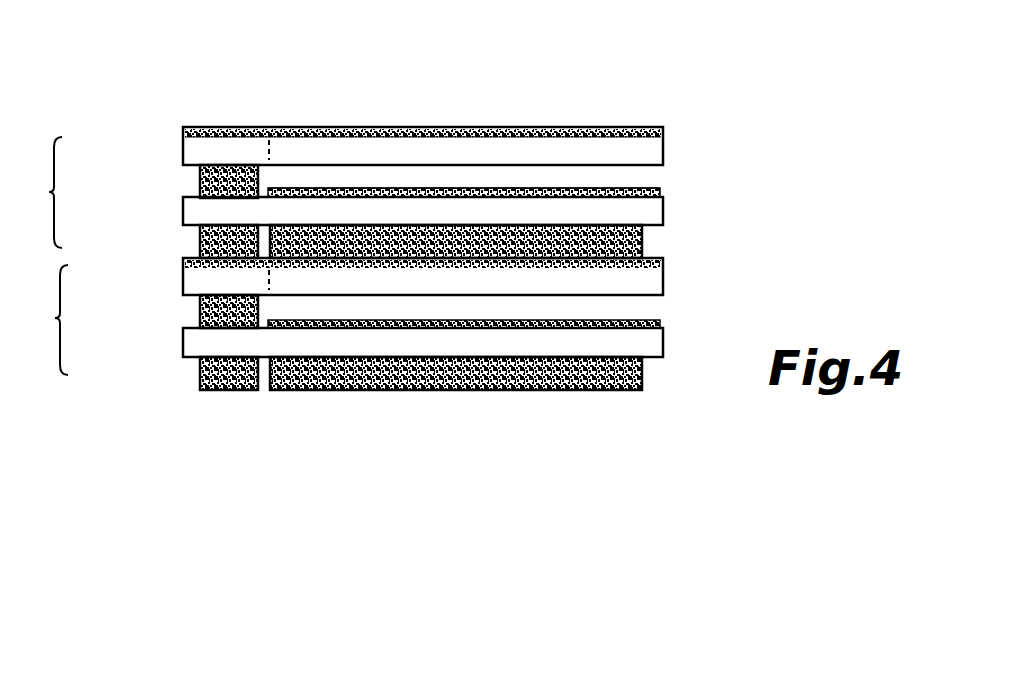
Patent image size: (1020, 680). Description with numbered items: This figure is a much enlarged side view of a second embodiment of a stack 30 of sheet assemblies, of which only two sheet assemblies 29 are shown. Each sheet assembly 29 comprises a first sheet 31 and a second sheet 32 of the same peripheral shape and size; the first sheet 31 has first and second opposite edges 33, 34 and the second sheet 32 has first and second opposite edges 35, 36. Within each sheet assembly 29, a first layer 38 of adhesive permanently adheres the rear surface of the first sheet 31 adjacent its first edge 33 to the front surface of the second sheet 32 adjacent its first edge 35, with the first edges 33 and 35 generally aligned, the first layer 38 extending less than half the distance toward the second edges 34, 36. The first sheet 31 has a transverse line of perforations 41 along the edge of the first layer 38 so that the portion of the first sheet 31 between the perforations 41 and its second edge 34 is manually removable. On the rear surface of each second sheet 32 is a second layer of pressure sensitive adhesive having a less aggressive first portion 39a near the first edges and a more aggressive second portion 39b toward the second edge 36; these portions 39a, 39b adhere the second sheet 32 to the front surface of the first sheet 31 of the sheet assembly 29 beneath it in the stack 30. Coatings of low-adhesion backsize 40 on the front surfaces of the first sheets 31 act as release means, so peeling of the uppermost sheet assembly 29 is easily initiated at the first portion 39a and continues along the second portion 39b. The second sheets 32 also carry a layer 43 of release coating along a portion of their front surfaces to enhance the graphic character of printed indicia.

The sheet assembly 29 is at (39, 256).
The stack of sheet assemblies 30 is at (700, 75).
The first sheet 31 is at (395, 128).
The second sheet 32 is at (660, 184).
The first edge of first sheet 33 is at (180, 140).
The second edge of first sheet 34 is at (678, 138).
The first edge of second sheet 35 is at (182, 212).
The second edge of second sheet 36 is at (665, 211).
The first layer of adhesive 38 is at (200, 182).
The first portion of second layer of pressure sensitive adhesive 39a is at (200, 243).
The second portion of second layer of pressure sensitive adhesive 39b is at (642, 240).
The low-adhesion backsize 40 is at (588, 128).
The line of perforations 41 is at (288, 128).
The layer of release coating 43 is at (438, 188).